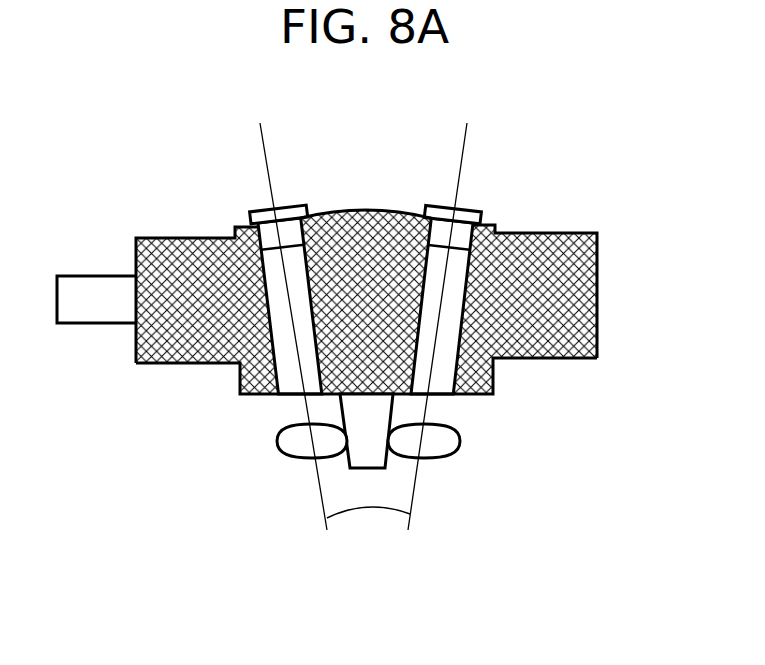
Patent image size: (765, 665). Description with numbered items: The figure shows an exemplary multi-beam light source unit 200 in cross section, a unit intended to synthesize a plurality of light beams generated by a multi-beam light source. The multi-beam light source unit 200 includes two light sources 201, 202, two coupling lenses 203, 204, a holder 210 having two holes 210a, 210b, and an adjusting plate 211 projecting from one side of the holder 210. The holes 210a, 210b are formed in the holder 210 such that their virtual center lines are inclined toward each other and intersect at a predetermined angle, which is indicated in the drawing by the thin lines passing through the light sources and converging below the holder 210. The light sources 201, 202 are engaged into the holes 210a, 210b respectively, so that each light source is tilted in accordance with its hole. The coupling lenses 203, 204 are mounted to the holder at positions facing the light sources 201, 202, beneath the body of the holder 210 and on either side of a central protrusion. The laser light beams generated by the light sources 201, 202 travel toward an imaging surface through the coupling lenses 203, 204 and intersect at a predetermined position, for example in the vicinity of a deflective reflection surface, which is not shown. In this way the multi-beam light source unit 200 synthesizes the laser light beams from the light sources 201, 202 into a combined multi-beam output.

The multi-beam light source unit 200 is at (578, 98).
The light source 201 is at (287, 203).
The light source 202 is at (475, 210).
The coupling lens 203 is at (278, 442).
The coupling lens 204 is at (460, 442).
The holder 210 is at (393, 292).
The hole 210a is at (285, 371).
The hole 210b is at (447, 371).
The adjusting plate 211 is at (73, 273).